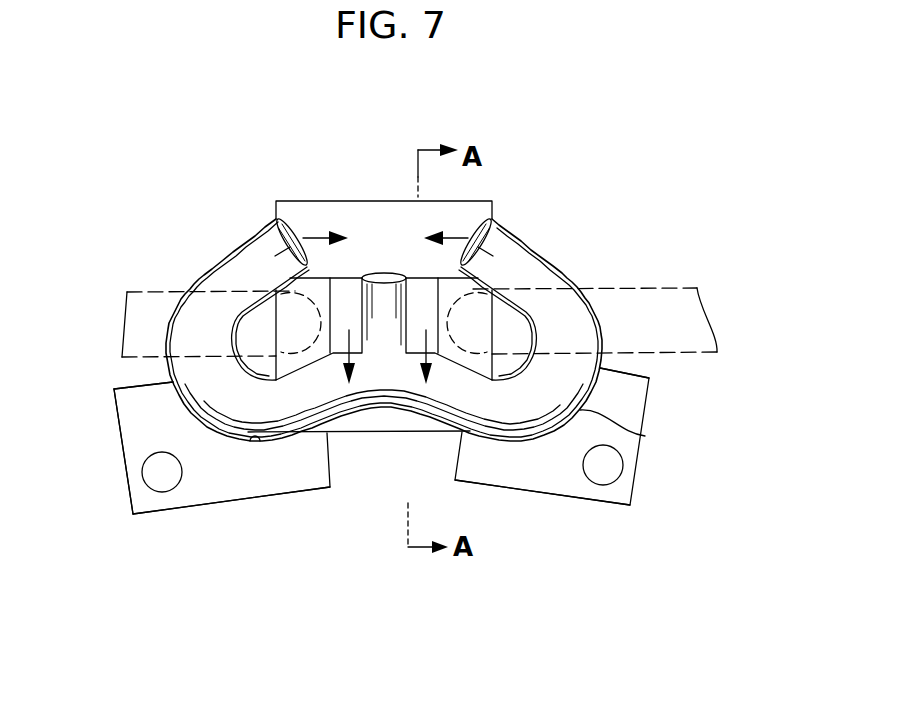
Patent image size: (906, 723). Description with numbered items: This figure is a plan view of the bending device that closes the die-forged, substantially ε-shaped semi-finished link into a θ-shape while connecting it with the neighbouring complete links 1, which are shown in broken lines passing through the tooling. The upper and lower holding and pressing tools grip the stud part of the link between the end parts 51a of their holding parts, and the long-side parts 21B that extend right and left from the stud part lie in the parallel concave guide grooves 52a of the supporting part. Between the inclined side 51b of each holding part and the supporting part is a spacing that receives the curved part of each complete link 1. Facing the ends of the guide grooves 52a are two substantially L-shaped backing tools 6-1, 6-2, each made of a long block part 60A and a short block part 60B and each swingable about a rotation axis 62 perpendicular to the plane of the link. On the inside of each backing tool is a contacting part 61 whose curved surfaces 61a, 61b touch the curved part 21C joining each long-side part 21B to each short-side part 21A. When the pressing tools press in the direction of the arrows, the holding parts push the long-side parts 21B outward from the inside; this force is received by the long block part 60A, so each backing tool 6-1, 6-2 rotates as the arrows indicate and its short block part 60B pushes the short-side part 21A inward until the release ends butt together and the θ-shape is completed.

The substantially θ-shaped complete link 1 is at (145, 312).
The end part of holding part 51a is at (423, 290).
The inclined side of holding part 51b is at (318, 290).
The concave guide groove 52a is at (407, 207).
The short-side part 21A is at (598, 362).
The long-side part 21B is at (454, 431).
The curved part 21C is at (197, 405).
The long block part 60A is at (318, 473).
The short block part 60B is at (118, 413).
The contacting part 61 is at (290, 455).
The curved surface 61a is at (250, 442).
The curved surface 61b is at (645, 436).
The rotation axis 62 is at (155, 478).
The backing tool 6-1 is at (262, 520).
The backing tool 6-2 is at (596, 526).